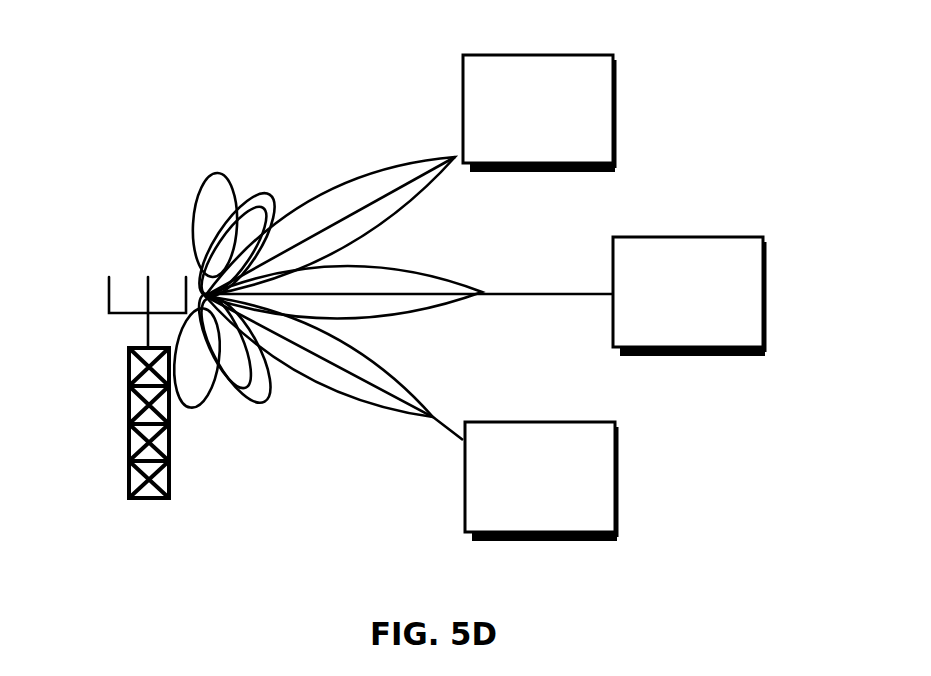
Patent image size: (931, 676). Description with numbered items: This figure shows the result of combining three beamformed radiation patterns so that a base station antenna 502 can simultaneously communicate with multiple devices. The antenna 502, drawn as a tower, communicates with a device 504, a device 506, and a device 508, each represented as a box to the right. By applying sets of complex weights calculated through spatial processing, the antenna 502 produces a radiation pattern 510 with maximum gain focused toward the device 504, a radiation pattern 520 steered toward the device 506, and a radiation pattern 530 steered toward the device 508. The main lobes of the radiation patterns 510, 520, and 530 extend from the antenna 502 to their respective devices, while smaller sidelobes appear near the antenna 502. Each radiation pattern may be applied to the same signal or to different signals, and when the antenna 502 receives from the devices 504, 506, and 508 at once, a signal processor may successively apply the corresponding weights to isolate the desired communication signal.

The base station antenna 502 is at (169, 447).
The device 504 is at (517, 138).
The device 506 is at (709, 321).
The device 508 is at (519, 505).
The radiation pattern 510 is at (338, 185).
The radiation pattern 520 is at (383, 268).
The radiation pattern 530 is at (390, 368).